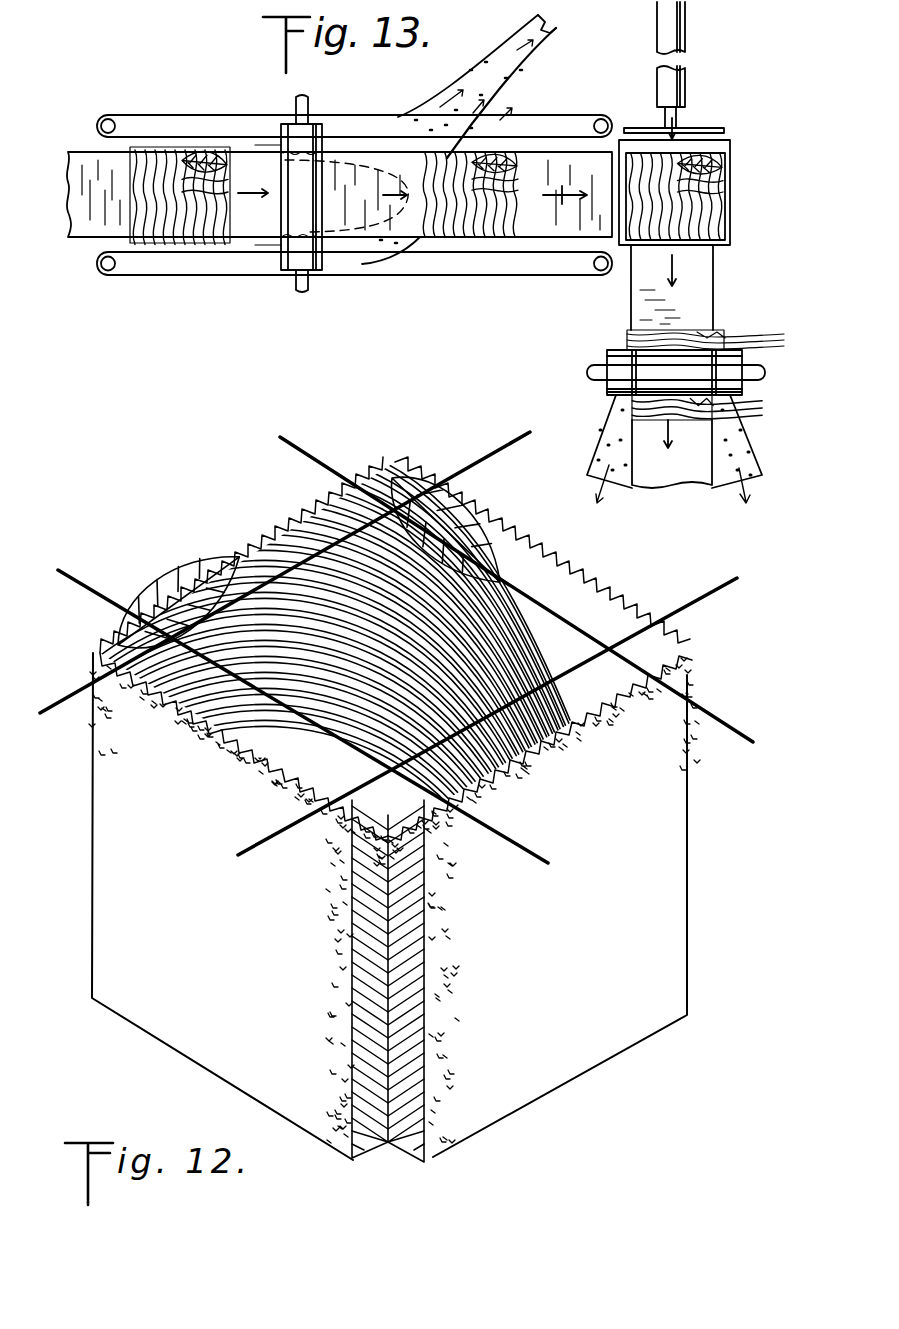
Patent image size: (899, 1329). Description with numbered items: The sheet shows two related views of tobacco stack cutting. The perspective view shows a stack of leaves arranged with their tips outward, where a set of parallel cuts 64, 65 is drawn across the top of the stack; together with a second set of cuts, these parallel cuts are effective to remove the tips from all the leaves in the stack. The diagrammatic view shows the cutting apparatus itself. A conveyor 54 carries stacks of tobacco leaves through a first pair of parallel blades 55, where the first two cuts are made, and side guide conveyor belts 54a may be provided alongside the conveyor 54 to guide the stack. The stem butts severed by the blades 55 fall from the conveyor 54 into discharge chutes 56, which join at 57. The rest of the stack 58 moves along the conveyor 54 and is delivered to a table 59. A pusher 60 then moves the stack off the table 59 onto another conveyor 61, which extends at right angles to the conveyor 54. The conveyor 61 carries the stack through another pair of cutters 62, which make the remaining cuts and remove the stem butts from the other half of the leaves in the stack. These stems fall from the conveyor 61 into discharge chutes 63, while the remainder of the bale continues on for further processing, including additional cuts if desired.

In FIG. 13, the conveyor 54 is at (73, 212).
In FIG. 13, the side guide conveyor belts 54a is at (147, 116).
In FIG. 13, the first pair of parallel blades 55 is at (306, 150).
In FIG. 13, the discharge chutes 56 is at (437, 98).
In FIG. 13, the junction of discharge chutes 57 is at (548, 45).
In FIG. 13, the stack 58 is at (200, 245).
In FIG. 13, the table 59 is at (722, 150).
In FIG. 13, the pusher 60 is at (700, 128).
In FIG. 13, the conveyor 61 is at (700, 277).
In FIG. 13, the pair of cutters 62 is at (707, 366).
In FIG. 13, the discharge chutes 63 is at (593, 450).
In FIG. 12, the parallel cut 64 is at (80, 562).
In FIG. 12, the parallel cut 65 is at (284, 448).